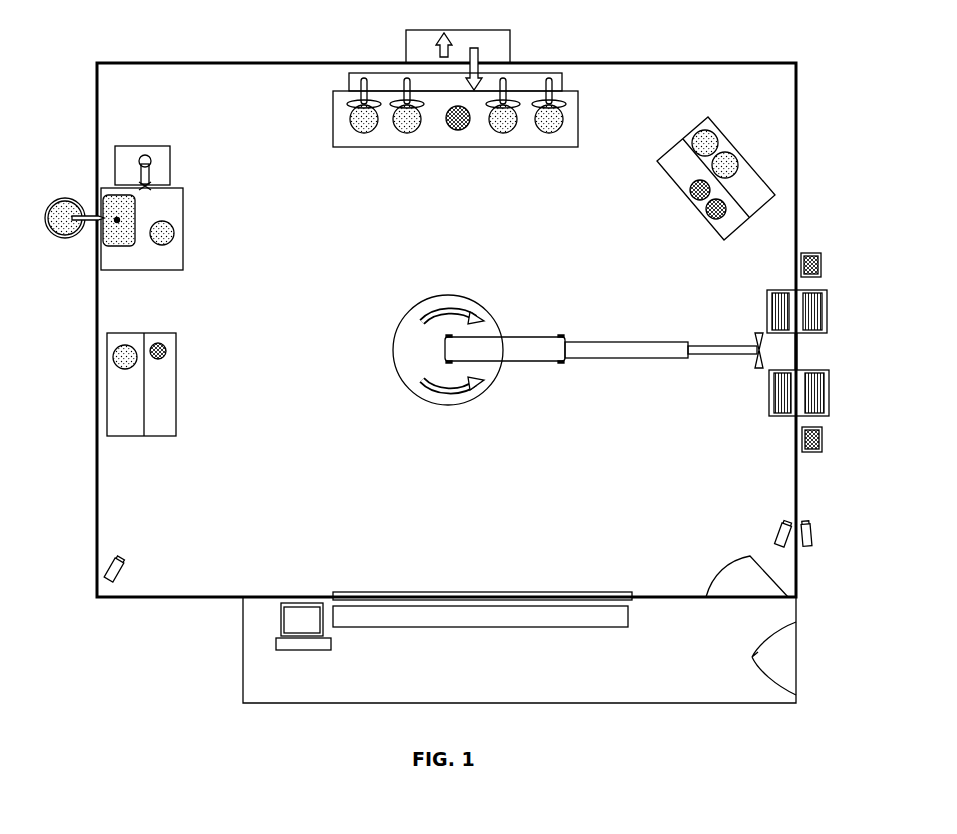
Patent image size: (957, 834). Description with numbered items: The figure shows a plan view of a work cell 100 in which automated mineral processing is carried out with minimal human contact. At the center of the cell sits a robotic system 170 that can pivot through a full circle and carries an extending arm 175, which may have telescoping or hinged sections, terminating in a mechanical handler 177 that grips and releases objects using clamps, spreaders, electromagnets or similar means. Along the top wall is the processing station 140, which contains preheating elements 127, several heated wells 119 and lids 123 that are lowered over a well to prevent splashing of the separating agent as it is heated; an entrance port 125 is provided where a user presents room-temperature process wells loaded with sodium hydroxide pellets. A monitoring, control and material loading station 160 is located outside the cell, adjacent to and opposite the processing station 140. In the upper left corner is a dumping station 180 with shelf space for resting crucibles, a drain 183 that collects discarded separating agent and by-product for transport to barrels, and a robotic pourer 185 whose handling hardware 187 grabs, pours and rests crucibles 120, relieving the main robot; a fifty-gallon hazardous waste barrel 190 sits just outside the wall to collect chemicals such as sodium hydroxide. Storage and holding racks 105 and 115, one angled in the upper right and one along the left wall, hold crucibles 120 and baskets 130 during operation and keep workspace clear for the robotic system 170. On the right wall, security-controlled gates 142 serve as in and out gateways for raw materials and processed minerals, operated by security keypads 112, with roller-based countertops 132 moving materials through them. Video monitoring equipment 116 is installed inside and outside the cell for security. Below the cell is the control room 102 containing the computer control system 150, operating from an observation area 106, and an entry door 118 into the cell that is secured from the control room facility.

The work cell 100 is at (278, 549).
The control room 102 is at (652, 684).
The storage/holding rack 105 is at (672, 168).
The observation area 106 is at (505, 627).
The security keypad 112 is at (822, 262).
The storage/holding rack 115 is at (176, 400).
The video monitoring equipment 116 is at (95, 570).
The entry door 118 is at (740, 570).
The heated well 119 is at (364, 126).
The crucible 120 is at (170, 235).
The lid 123 is at (578, 104).
The entrance port 125 is at (556, 82).
The preheating element 127 is at (458, 130).
The basket 130 is at (714, 216).
The roller-based countertop 132 is at (827, 320).
The processing station 140 is at (333, 118).
The security-controlled gate 142 is at (797, 370).
The computer control system 150 is at (282, 620).
The monitoring, control and material loading station 160 is at (420, 38).
The robotic system 170 is at (394, 330).
The extending arm 175 is at (610, 352).
The mechanical handler 177 is at (752, 370).
The dumping station 180 is at (182, 212).
The drain 183 is at (120, 237).
The robotic pourer 185 is at (156, 150).
The handling hardware 187 is at (146, 174).
The hazardous waste barrel 190 is at (66, 205).